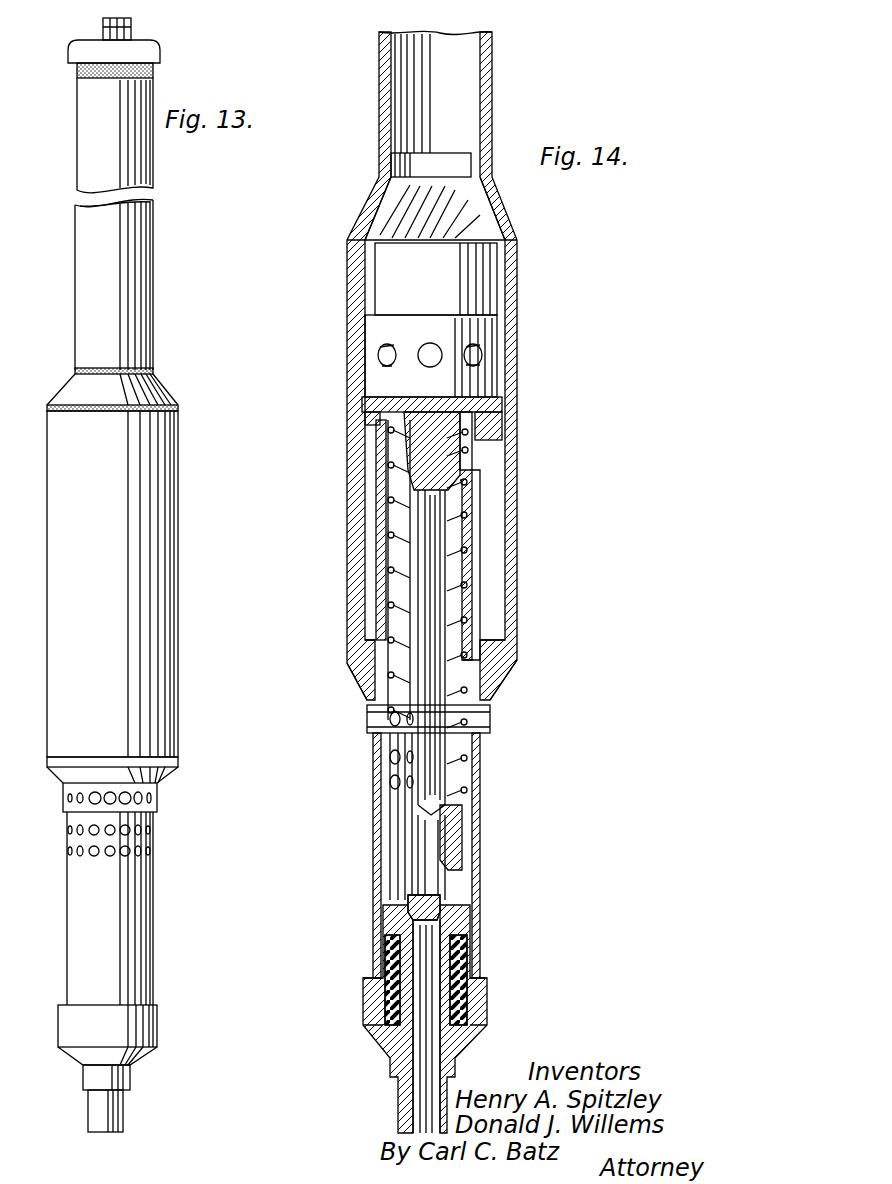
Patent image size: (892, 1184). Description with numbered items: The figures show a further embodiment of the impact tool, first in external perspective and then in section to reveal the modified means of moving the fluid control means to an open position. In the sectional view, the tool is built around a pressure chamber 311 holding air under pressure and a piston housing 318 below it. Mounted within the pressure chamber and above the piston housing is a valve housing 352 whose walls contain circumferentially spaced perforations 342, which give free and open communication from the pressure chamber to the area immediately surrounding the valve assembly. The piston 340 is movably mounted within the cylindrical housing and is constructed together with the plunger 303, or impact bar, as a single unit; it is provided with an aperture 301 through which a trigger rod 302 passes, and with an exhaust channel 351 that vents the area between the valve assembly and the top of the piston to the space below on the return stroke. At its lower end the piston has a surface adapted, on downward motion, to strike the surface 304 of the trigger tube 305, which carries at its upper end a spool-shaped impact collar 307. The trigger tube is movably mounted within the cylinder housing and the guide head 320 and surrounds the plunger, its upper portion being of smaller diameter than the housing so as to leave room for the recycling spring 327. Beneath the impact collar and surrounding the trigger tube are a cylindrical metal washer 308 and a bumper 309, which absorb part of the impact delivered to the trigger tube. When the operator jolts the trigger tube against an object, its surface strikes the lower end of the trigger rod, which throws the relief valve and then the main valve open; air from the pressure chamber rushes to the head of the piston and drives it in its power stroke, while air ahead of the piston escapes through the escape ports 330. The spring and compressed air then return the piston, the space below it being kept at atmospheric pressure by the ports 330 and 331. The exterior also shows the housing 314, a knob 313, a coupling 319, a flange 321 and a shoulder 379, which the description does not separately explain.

In FIG. 14, the aperture 301 is at (462, 462).
In FIG. 14, the trigger rod 302 is at (450, 575).
In FIG. 14, the plunger 303 is at (433, 697).
In FIG. 14, the surface 304 is at (458, 805).
In FIG. 13, the trigger tube 305 is at (123, 1115).
In FIG. 14, the trigger tube 305 is at (405, 1107).
In FIG. 14, the spool-shaped impact collar 307 is at (447, 876).
In FIG. 14, the metal washer 308 is at (470, 930).
In FIG. 14, the bumper 309 is at (467, 965).
In FIG. 14, the pressure chamber 311 is at (435, 174).
In FIG. 13, the knob 313 is at (131, 33).
In FIG. 13, the housing 314 is at (150, 172).
In FIG. 14, the housing 314 is at (487, 80).
In FIG. 13, the piston housing 318 is at (148, 920).
In FIG. 14, the piston housing 318 is at (480, 830).
In FIG. 14, the tapered coupling 319 is at (512, 656).
In FIG. 13, the guide head 320 is at (157, 1030).
In FIG. 14, the guide head 320 is at (485, 1040).
In FIG. 14, the flange 321 is at (490, 1000).
In FIG. 14, the recycling spring 327 is at (390, 540).
In FIG. 13, the escape ports 330 is at (148, 797).
In FIG. 14, the escape ports 330 is at (480, 723).
In FIG. 13, the ports 331 is at (150, 830).
In FIG. 14, the ports 331 is at (478, 760).
In FIG. 14, the piston 340 is at (428, 440).
In FIG. 14, the perforations 342 is at (483, 358).
In FIG. 14, the exhaust channel 351 is at (400, 452).
In FIG. 14, the valve housing 352 is at (487, 327).
In FIG. 14, the shoulder 379 is at (455, 243).